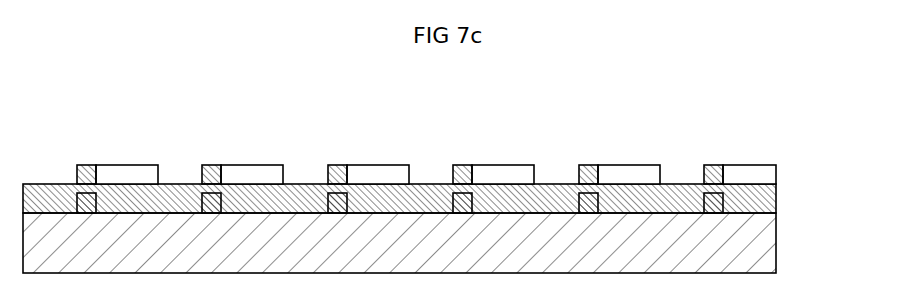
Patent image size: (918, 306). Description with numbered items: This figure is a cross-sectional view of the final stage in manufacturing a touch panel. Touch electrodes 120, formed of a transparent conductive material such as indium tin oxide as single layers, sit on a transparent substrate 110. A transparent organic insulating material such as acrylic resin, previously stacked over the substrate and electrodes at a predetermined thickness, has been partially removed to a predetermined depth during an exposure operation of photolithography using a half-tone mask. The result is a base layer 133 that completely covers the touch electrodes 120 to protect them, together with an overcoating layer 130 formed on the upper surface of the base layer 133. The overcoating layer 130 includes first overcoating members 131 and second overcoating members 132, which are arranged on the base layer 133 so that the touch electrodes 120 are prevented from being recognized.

The transparent substrate 110 is at (772, 250).
The touch electrodes 120 is at (725, 202).
The overcoating layer 130 is at (426, 133).
The first overcoating members 131 is at (502, 170).
The second overcoating members 132 is at (400, 138).
The base layer 133 is at (634, 194).